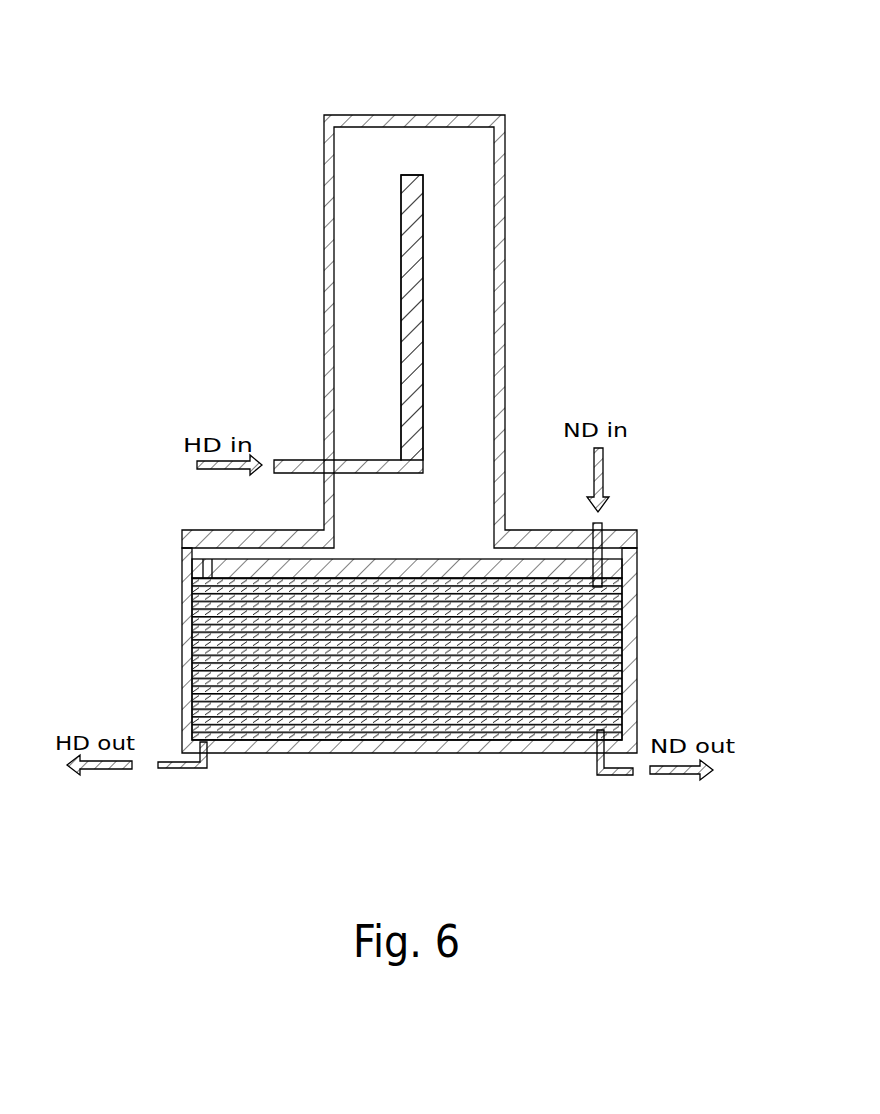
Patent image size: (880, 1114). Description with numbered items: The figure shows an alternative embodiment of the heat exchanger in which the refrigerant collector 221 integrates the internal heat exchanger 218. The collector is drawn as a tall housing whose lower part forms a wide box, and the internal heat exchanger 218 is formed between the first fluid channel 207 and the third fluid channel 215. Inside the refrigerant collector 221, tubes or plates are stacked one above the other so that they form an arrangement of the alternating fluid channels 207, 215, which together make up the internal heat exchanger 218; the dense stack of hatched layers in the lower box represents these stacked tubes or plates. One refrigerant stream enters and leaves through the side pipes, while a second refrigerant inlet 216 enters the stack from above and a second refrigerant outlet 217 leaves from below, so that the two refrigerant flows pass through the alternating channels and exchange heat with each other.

The first fluid channel 207 is at (456, 140).
The refrigerant collector 221 is at (478, 180).
The internal heat exchanger 218 is at (678, 642).
The third fluid channel 215 is at (524, 735).
The second refrigerant inlet 216 is at (603, 527).
The second refrigerant outlet 217 is at (612, 776).